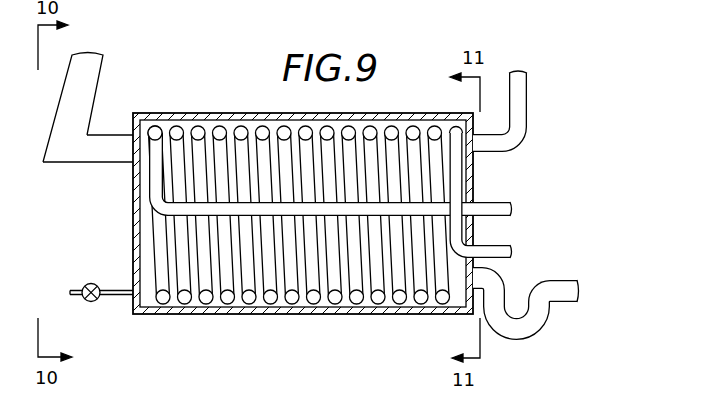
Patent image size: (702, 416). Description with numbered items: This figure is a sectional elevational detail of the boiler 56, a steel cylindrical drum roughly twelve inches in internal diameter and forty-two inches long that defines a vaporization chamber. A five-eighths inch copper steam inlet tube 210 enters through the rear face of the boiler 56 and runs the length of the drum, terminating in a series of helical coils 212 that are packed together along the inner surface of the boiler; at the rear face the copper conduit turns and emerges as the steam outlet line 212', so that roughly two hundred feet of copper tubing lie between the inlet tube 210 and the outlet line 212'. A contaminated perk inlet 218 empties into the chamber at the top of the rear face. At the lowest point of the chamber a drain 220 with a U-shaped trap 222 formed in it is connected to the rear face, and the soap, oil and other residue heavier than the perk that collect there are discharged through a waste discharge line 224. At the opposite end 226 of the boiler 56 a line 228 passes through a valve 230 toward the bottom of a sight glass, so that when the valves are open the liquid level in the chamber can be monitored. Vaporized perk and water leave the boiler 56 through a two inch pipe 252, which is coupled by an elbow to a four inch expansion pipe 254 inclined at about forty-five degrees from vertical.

The boiler 56 is at (273, 231).
The steam inlet tube 210 is at (490, 201).
The helical coils 212 is at (299, 190).
The steam outlet line 212' is at (508, 193).
The contaminated perk inlet 218 is at (518, 113).
The drain 220 is at (542, 312).
The U-shaped trap 222 is at (530, 330).
The waste discharge line 224 is at (560, 293).
The opposite end 226 is at (133, 232).
The line 228 is at (118, 288).
The valve 230 is at (86, 301).
The pipe 252 is at (112, 152).
The expansion pipe 254 is at (80, 115).